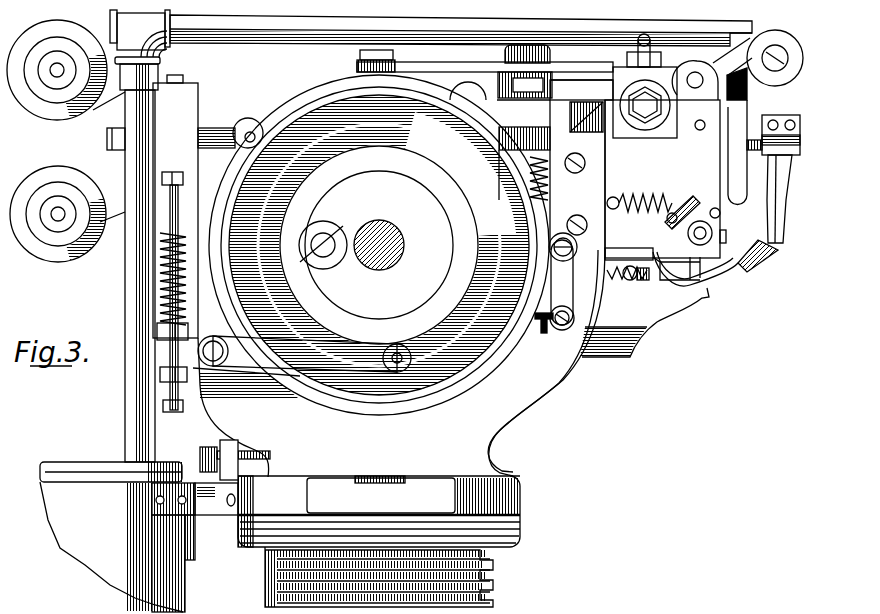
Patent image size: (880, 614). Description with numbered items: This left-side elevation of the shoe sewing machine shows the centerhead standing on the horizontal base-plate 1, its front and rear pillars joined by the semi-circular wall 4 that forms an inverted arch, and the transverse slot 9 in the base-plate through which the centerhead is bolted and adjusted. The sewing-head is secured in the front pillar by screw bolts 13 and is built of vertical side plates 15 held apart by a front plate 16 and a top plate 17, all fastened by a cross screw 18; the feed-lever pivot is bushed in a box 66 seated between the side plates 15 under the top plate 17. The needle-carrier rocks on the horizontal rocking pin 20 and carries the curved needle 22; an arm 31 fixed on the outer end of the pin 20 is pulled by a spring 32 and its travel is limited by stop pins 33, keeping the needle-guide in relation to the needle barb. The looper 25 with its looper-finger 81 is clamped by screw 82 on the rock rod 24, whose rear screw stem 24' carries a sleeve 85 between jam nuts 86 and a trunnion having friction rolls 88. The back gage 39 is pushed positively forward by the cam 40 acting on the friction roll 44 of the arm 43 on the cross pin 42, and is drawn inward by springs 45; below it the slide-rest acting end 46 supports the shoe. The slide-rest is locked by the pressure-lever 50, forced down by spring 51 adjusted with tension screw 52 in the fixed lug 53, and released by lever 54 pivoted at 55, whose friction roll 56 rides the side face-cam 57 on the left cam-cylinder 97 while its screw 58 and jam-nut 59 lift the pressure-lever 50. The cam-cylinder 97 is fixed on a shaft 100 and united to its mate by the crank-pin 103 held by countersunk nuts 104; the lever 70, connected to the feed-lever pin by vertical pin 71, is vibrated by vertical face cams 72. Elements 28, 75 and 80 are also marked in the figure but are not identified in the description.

The horizontal base-plate 1 is at (288, 526).
The semi-circular wall 4 is at (423, 407).
The transverse slot 9 is at (381, 486).
The screw bolts 13 is at (580, 187).
The vertical side plates 15 is at (665, 160).
The front plate 16 is at (737, 152).
The top plate 17 is at (581, 90).
The cross screw 18 is at (697, 109).
The horizontal rocking pin 20 is at (690, 237).
The curved needle 22 is at (708, 280).
The rock rod 24 is at (758, 84).
The screw stem 24' is at (66, 141).
The looper 25 is at (789, 199).
The lever 28 is at (705, 262).
The arm 31 is at (686, 212).
The spring 32 is at (639, 198).
The stop pins 33 is at (715, 208).
The back gage 39 is at (673, 282).
The cam 40 is at (543, 212).
The cross pin 42 is at (554, 334).
The arm 43 is at (562, 282).
The friction roll 44 is at (571, 255).
The springs 45 is at (533, 357).
The acting end of slide-rest 46 is at (705, 300).
The pressure-lever 50 is at (157, 333).
The spring 51 is at (183, 279).
The tension screw 52 is at (171, 282).
The fixed lug 53 is at (199, 198).
The lever 54 is at (295, 356).
The pivot 55 is at (213, 351).
The friction roll 56 is at (409, 358).
The side face-cam 57 is at (387, 245).
The screw 58 is at (177, 416).
The jam-nut 59 is at (163, 371).
The box 66 is at (645, 95).
The lever 70 is at (485, 61).
The vertical pin 71 is at (362, 76).
The vertical face cams 72 is at (379, 245).
The hexagonal nut 75 is at (645, 105).
The knob 80 is at (537, 71).
The looper-finger 81 is at (760, 262).
The screw 82 is at (773, 127).
The sleeve 85 is at (216, 131).
The jam nuts 86 is at (110, 150).
The friction rolls 88 is at (250, 123).
The cam-cylinder 97 is at (390, 243).
The shaft 100 is at (379, 238).
The crank-pin 103 is at (321, 244).
The countersunk nuts 104 is at (323, 238).